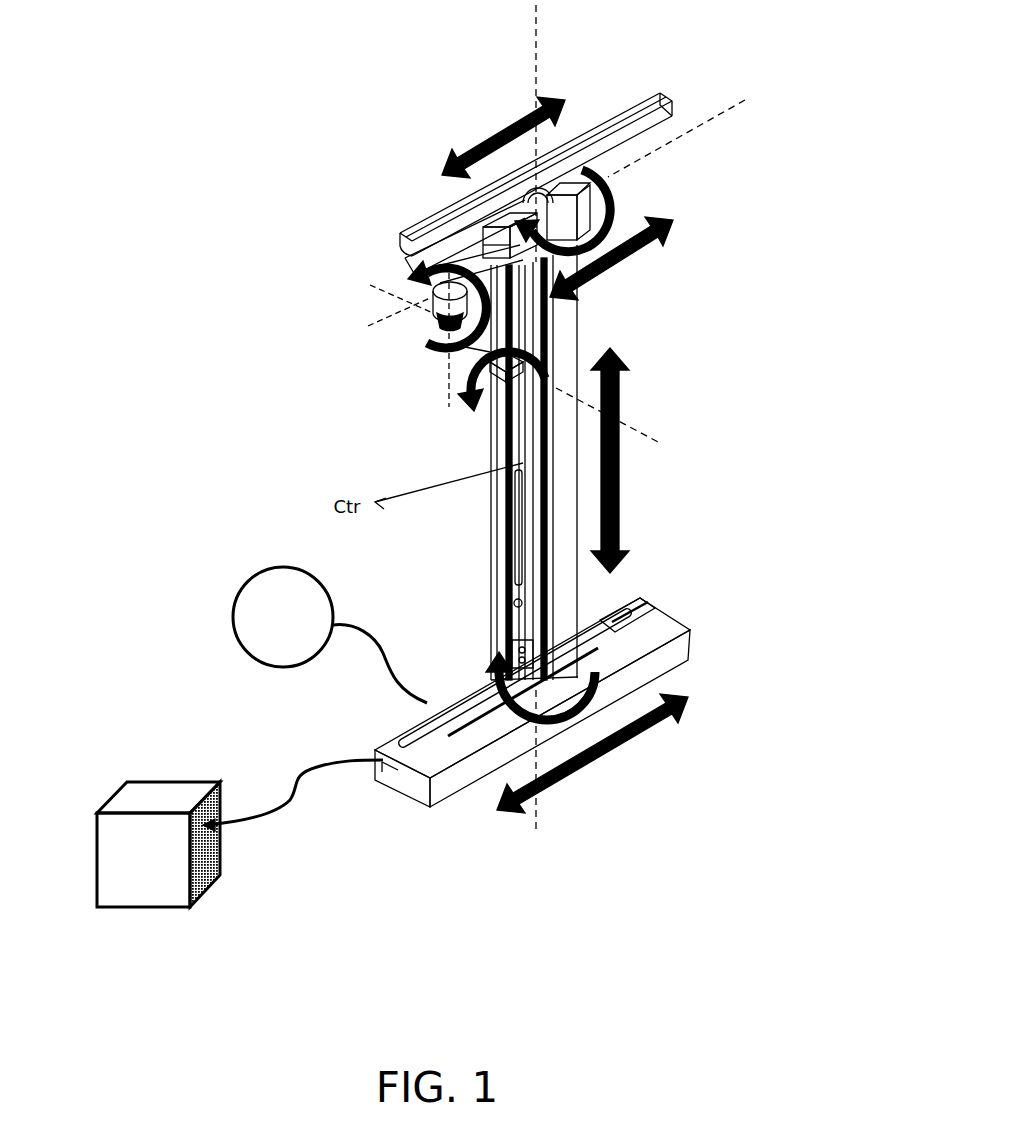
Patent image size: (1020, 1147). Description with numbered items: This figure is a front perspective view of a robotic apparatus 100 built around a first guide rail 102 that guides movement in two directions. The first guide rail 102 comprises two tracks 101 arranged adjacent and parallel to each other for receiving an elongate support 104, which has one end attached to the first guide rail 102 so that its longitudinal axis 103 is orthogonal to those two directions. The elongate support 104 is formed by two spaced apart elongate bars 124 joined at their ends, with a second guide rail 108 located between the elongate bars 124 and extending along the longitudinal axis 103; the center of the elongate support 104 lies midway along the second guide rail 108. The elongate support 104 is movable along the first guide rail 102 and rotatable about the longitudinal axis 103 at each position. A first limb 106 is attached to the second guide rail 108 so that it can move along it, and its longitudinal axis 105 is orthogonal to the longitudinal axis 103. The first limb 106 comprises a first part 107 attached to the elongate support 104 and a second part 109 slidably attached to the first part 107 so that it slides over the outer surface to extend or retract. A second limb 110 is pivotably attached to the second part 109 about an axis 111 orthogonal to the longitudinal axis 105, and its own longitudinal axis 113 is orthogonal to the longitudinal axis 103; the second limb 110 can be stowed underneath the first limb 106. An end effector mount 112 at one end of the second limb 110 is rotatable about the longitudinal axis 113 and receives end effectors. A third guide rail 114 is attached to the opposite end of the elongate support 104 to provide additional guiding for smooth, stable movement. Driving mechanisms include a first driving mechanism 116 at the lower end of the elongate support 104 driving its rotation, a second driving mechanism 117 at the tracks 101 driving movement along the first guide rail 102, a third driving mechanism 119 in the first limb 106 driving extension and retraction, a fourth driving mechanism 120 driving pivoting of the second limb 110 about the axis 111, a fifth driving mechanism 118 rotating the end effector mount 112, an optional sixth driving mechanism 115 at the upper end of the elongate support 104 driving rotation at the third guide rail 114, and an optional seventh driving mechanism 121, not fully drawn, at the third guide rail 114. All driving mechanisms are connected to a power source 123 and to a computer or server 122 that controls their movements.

The robotic apparatus 100 is at (253, 483).
The tracks 101 is at (593, 640).
The first guide rail 102 is at (407, 778).
The longitudinal axis of the elongate support 103 is at (535, 43).
The elongate support 104 is at (700, 148).
The longitudinal axis of the first limb 105 is at (723, 112).
The first limb 106 is at (470, 263).
The first part of the first limb 107 is at (500, 222).
The second guide rail 108 is at (520, 503).
The second part of the first limb 109 is at (437, 280).
The second limb 110 is at (463, 357).
The axis 111 is at (447, 412).
The end effector mount 112 is at (503, 380).
The longitudinal axis of the second limb 113 is at (657, 440).
The third guide rail 114 is at (637, 95).
The sixth driving mechanism 115 is at (558, 173).
The first driving mechanism 116 is at (510, 668).
The second driving mechanism 117 is at (643, 658).
The fifth driving mechanism 118 is at (467, 343).
The third driving mechanism 119 is at (483, 263).
The fourth driving mechanism 120 is at (433, 297).
The seventh driving mechanism 121 is at (658, 100).
The computer or server 122 is at (160, 885).
The power source 123 is at (253, 640).
The elongate bars 124 is at (481, 527).